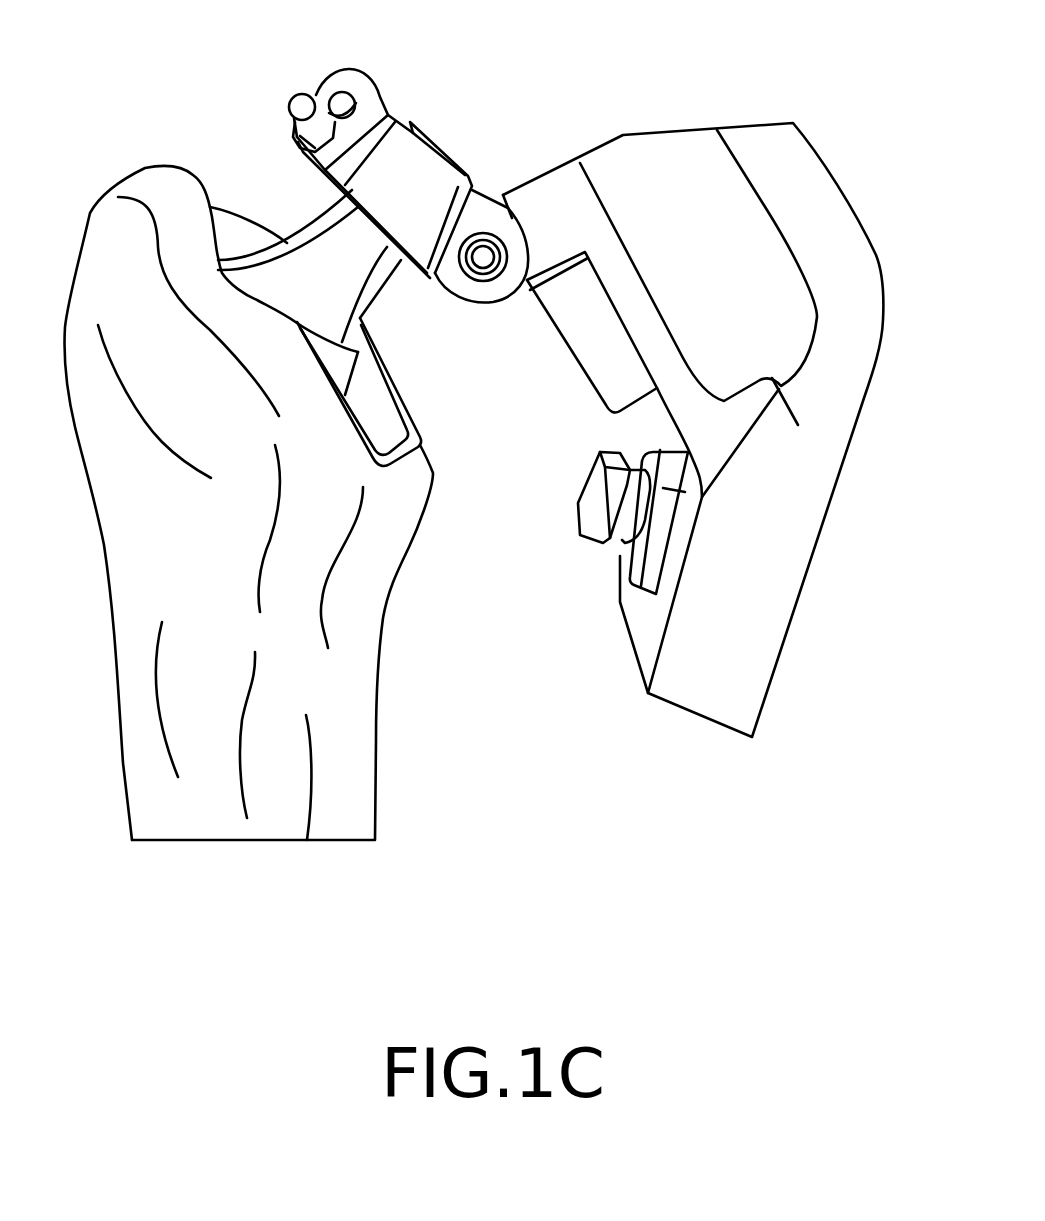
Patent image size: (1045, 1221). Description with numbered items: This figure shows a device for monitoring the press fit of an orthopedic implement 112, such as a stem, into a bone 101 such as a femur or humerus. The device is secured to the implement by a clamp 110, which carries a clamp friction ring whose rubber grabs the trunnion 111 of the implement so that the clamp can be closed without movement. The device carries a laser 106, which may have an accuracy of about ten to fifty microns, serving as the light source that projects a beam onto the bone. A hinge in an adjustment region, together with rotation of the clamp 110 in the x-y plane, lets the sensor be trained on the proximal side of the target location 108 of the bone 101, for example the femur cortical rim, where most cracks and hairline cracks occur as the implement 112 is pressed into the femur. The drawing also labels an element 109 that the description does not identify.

The bone 101 is at (375, 658).
The laser 106 is at (605, 283).
The target location 108 is at (398, 453).
The fastener 109 is at (592, 547).
The clamp 110 is at (455, 207).
The trunnion 111 is at (453, 149).
The orthopedic implement 112 is at (340, 362).